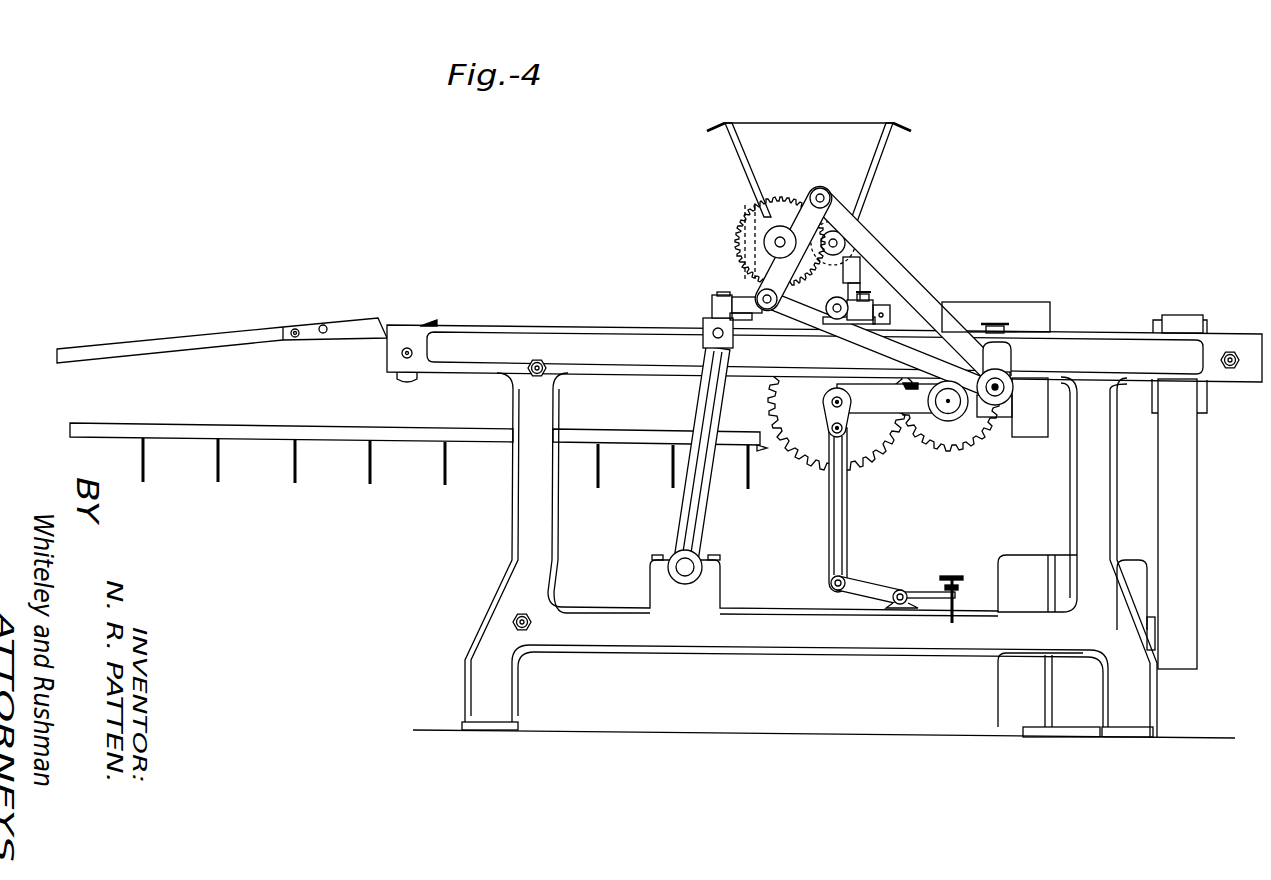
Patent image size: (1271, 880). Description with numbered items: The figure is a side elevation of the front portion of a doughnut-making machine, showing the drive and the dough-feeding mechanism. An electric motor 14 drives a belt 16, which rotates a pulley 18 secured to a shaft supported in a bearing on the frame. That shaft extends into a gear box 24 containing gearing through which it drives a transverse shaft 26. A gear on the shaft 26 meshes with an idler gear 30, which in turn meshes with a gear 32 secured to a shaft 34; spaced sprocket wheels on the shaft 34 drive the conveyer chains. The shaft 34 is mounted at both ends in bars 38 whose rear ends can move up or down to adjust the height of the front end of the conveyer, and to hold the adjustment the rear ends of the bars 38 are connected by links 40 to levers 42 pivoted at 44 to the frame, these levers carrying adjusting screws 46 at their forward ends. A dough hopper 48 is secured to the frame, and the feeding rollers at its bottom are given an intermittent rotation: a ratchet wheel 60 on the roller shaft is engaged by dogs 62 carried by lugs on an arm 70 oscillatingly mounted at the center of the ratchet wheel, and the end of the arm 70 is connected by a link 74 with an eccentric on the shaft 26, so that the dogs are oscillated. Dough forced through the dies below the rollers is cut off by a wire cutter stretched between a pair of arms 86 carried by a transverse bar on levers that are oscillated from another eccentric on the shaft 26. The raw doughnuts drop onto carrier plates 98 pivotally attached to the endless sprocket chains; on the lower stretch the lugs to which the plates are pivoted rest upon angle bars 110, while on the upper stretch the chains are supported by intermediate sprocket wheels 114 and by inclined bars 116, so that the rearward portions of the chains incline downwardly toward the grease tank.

The electric motor 14 is at (999, 693).
The belt 16 is at (1192, 470).
The pulley 18 is at (1206, 322).
The gear box 24 is at (1046, 310).
The transverse shaft 26 is at (997, 397).
The idler gear 30 is at (955, 432).
The gear 32 is at (898, 440).
The shaft 34 is at (832, 410).
The bars 38 is at (872, 410).
The links 40 is at (828, 531).
The levers 42 is at (866, 584).
The pivot 44 is at (905, 594).
The adjusting screws 46 is at (958, 602).
The dough hopper 48 is at (864, 172).
The ratchet wheel 60 is at (738, 222).
The dogs 62 is at (834, 222).
The arm 70 is at (795, 197).
The link 74 is at (878, 345).
The arms 86 is at (826, 301).
The carrier plates 98 is at (370, 484).
The angle bars 110 is at (267, 432).
The intermediate sprocket wheels 114 is at (405, 382).
The inclined bars 116 is at (222, 340).